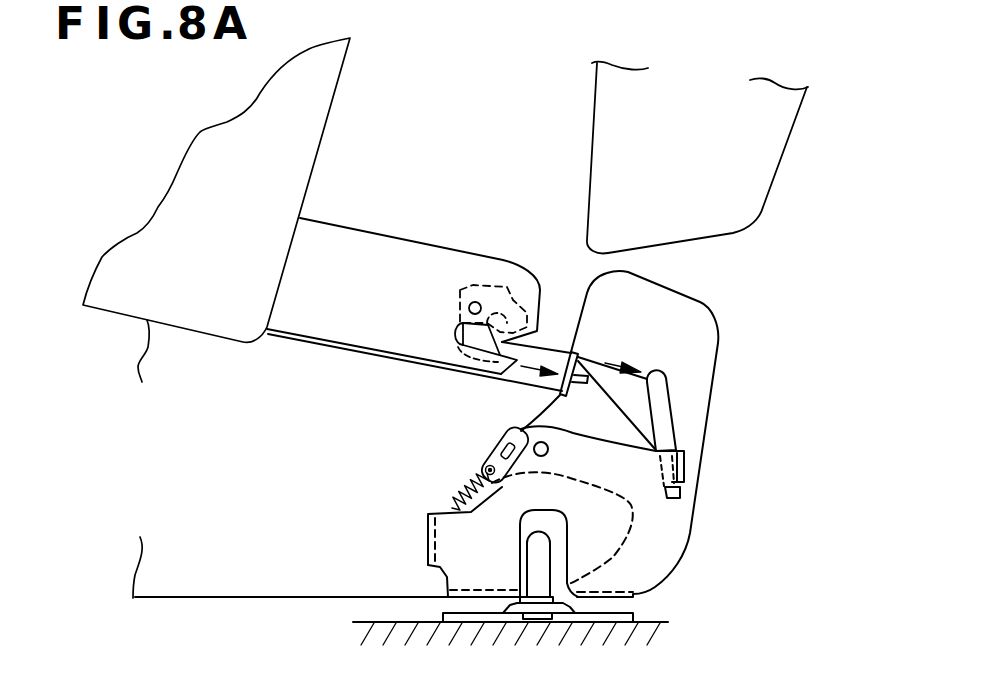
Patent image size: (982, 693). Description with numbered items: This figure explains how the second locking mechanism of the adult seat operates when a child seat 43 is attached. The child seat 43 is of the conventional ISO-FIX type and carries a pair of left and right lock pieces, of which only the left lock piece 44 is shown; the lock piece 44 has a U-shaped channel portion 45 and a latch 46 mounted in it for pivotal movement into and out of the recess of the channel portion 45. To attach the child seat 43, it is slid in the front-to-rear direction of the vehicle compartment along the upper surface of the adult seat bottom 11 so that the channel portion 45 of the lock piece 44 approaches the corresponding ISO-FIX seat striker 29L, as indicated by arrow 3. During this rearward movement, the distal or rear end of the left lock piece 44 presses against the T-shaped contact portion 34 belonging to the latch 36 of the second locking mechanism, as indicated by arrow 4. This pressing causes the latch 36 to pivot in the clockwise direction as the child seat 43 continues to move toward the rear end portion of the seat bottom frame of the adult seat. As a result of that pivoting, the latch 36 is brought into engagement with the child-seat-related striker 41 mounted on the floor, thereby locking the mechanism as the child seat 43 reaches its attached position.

The child seat 43 is at (333, 110).
The lock piece 44 is at (413, 240).
The U-shaped channel portion 45 is at (527, 310).
The latch 46 is at (453, 335).
The T-shaped contact portion 34 is at (561, 394).
The arrow 3 is at (605, 362).
The arrow 4 is at (525, 366).
The ISO-FIX seat striker 29L is at (666, 377).
The latch 36 is at (600, 547).
The child-seat-related striker 41 is at (527, 552).
The adult seat bottom 11 is at (228, 597).